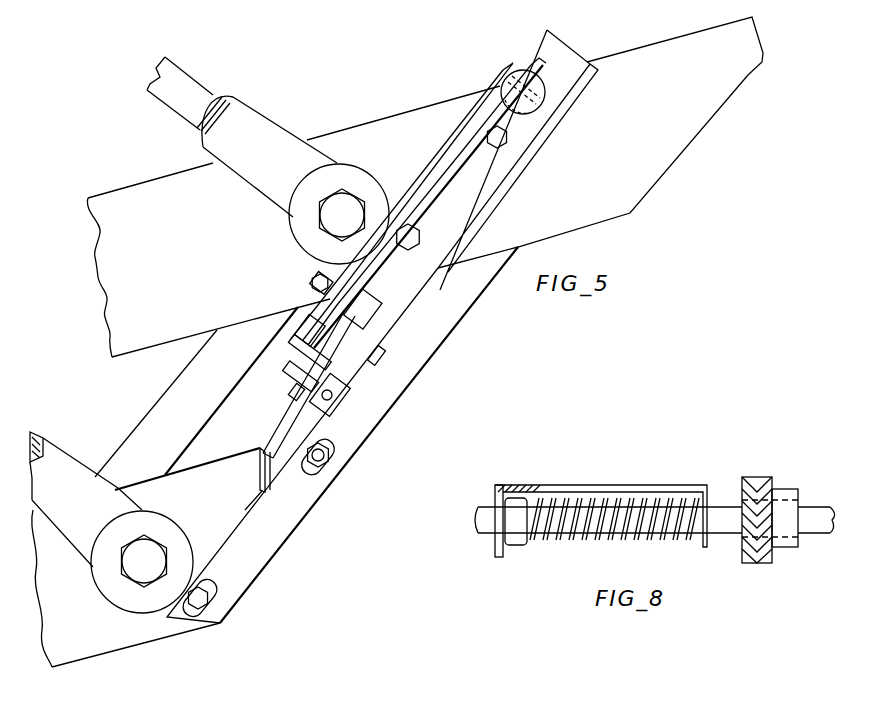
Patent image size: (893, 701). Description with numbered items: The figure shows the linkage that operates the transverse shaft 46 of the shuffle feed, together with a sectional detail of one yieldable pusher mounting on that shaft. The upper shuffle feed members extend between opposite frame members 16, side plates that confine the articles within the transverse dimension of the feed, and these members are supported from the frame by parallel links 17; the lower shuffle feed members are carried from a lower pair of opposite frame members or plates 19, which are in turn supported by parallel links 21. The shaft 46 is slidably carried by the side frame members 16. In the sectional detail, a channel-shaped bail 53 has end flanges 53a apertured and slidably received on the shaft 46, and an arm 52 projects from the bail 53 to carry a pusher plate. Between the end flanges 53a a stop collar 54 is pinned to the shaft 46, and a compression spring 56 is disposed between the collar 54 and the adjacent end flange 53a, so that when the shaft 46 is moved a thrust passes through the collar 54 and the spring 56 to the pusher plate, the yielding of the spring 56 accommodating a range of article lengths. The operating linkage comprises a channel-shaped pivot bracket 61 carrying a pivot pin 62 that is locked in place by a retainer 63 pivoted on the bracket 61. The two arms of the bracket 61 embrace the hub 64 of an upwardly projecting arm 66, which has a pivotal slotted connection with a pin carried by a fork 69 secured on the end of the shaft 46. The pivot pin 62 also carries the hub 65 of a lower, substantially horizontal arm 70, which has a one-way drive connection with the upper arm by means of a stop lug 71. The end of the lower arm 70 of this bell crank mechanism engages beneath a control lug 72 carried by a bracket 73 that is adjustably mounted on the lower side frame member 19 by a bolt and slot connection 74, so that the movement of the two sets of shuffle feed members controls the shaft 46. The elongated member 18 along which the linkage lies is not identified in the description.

In FIG. 5, the frame members 16 is at (658, 150).
In FIG. 8, the frame members 16 is at (750, 477).
In FIG. 5, the parallel links 17 is at (192, 88).
In FIG. 5, the channel rail 18 is at (212, 402).
In FIG. 5, the lower frame members 19 is at (143, 630).
In FIG. 5, the parallel links 21 is at (34, 433).
In FIG. 5, the transverse shaft 46 is at (538, 97).
In FIG. 8, the transverse shaft 46 is at (717, 543).
In FIG. 8, the arm 52 is at (505, 485).
In FIG. 8, the channel-shaped bail 53 is at (595, 486).
In FIG. 8, the end flanges 53a is at (495, 547).
In FIG. 8, the stop collar 54 is at (517, 537).
In FIG. 8, the compression spring 56 is at (578, 537).
In FIG. 5, the pivot bracket 61 is at (427, 165).
In FIG. 8, the pivot bracket 61 is at (772, 478).
In FIG. 5, the pivot pin 62 is at (375, 350).
In FIG. 5, the retainer 63 is at (320, 283).
In FIG. 5, the hub 64 is at (307, 328).
In FIG. 5, the hub 65 is at (367, 315).
In FIG. 5, the upwardly projecting arm 66 is at (455, 172).
In FIG. 5, the fork 69 is at (545, 83).
In FIG. 5, the lower arm 70 is at (352, 367).
In FIG. 5, the stop lug 71 is at (298, 350).
In FIG. 5, the control lug 72 is at (293, 372).
In FIG. 5, the bracket 73 is at (277, 427).
In FIG. 5, the bolt and slot connection 74 is at (212, 605).